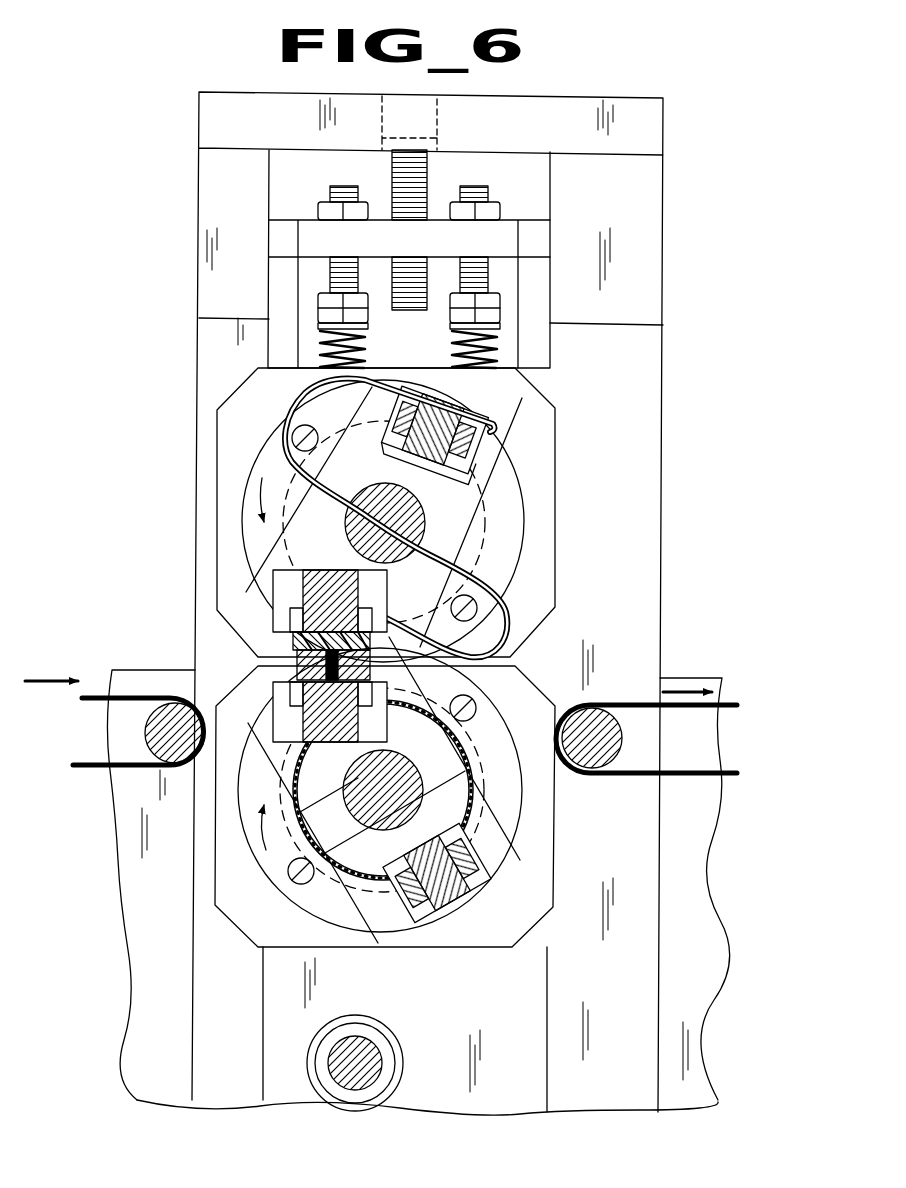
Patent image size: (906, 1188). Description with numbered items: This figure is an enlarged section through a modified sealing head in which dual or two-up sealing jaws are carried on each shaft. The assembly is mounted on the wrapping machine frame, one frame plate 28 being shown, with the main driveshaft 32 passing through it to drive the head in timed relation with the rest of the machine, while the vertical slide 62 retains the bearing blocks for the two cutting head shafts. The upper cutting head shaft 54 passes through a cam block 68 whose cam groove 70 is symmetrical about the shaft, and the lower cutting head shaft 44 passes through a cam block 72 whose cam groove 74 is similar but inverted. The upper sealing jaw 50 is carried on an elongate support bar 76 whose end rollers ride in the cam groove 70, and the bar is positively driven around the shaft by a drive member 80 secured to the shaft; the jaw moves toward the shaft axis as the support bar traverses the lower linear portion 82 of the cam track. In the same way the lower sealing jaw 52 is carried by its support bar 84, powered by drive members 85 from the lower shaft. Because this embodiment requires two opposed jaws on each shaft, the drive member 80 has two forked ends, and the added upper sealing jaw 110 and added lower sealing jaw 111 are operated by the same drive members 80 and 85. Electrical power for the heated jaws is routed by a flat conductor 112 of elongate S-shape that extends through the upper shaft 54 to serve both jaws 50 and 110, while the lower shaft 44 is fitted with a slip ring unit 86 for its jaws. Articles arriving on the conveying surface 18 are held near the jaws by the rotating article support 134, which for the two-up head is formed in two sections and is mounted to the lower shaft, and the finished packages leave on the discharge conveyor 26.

The conveying surface 18 is at (97, 693).
The discharge conveyor 26 is at (737, 705).
The frame plate 28 is at (140, 950).
The main driveshaft 32 is at (356, 1045).
The lower cutting head shaft 44 is at (355, 779).
The upper sealing jaw 50 is at (493, 420).
The lower sealing jaw 52 is at (447, 930).
The upper cutting head shaft 54 is at (385, 487).
The vertical slide 62 is at (195, 171).
The cam block 68 is at (542, 515).
The cam groove 70 is at (517, 495).
The lower cam block 72 is at (540, 808).
The lower cam groove 74 is at (520, 787).
The support bar 76 is at (307, 600).
The drive member 80 is at (327, 538).
The lower linear portion 82 is at (440, 622).
The support bar 84 is at (300, 712).
The drive member 85 is at (368, 900).
The slip ring unit 86 is at (470, 687).
The added upper sealing jaw 110 is at (292, 640).
The added lower sealing jaw 111 is at (296, 662).
The flat conductor 112 is at (283, 408).
The article support 134 is at (322, 890).